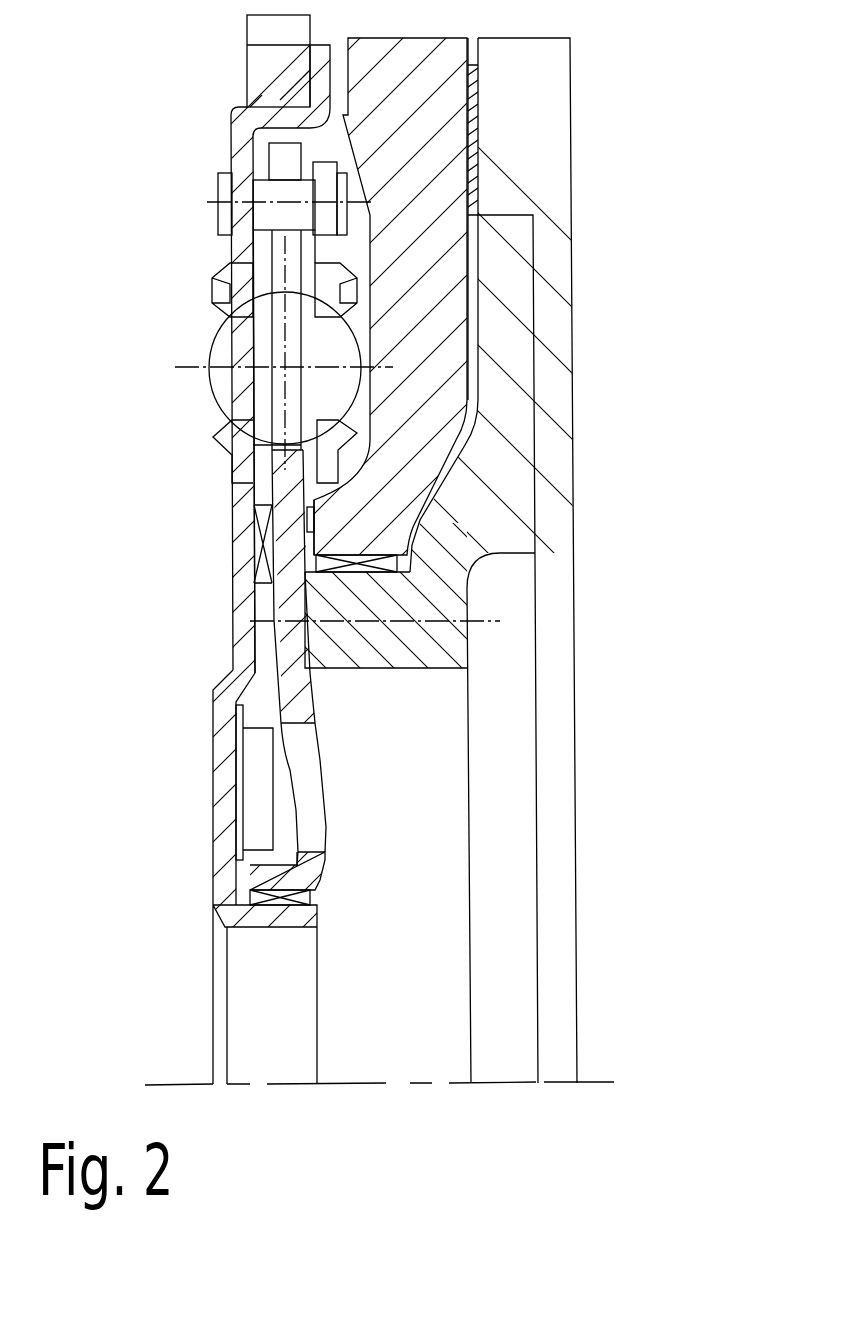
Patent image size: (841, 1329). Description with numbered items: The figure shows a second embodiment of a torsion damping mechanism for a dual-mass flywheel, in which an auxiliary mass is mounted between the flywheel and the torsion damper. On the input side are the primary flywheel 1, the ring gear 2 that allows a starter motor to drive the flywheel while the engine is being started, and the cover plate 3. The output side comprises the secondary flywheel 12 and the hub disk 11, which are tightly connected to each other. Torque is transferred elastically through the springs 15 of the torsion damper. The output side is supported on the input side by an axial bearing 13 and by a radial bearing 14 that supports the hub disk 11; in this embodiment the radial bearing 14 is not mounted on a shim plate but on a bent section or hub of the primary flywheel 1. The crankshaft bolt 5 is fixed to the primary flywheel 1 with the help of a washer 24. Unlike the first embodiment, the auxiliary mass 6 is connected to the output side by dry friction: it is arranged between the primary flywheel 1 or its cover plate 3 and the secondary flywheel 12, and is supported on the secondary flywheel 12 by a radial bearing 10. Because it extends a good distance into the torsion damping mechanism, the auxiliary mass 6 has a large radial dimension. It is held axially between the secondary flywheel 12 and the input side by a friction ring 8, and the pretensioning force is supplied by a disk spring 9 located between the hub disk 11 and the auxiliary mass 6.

The primary flywheel 1 is at (248, 127).
The ring gear 2 is at (275, 70).
The cover plate 3 is at (330, 262).
The crankshaft bolt 5 is at (257, 758).
The auxiliary mass 6 is at (418, 290).
The friction ring 8 is at (473, 173).
The disk spring 9 is at (263, 537).
The radial bearing 10 is at (397, 567).
The hub disk 11 is at (290, 605).
The secondary flywheel 12 is at (520, 95).
The axial bearing 13 is at (307, 522).
The radial bearing 14 is at (270, 895).
The springs 15 is at (208, 355).
The washer 24 is at (236, 712).